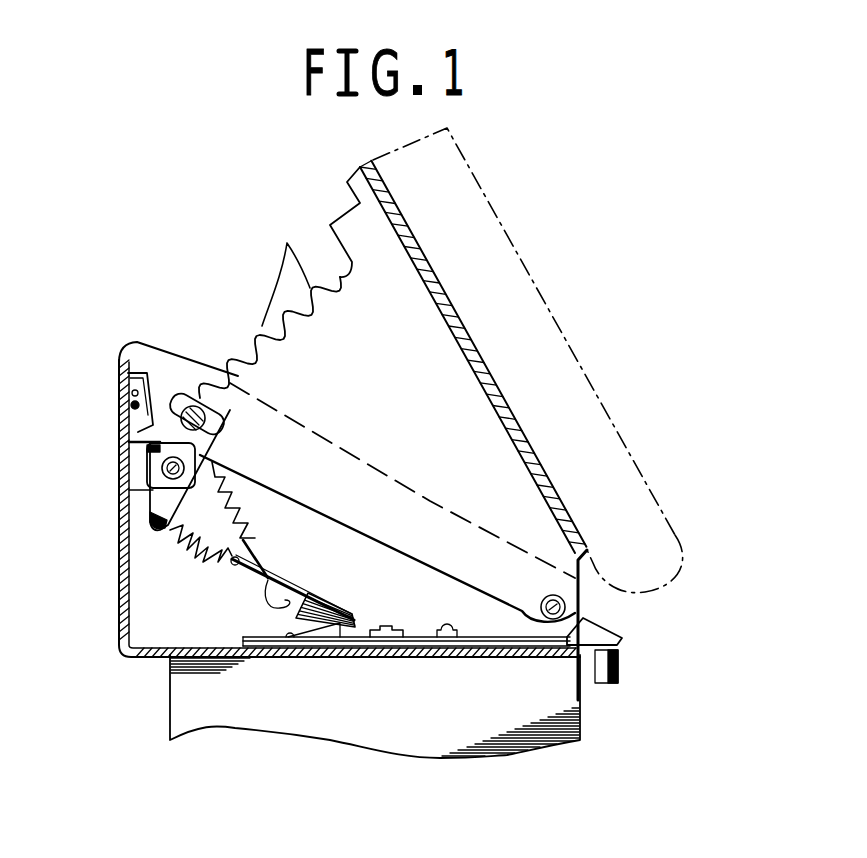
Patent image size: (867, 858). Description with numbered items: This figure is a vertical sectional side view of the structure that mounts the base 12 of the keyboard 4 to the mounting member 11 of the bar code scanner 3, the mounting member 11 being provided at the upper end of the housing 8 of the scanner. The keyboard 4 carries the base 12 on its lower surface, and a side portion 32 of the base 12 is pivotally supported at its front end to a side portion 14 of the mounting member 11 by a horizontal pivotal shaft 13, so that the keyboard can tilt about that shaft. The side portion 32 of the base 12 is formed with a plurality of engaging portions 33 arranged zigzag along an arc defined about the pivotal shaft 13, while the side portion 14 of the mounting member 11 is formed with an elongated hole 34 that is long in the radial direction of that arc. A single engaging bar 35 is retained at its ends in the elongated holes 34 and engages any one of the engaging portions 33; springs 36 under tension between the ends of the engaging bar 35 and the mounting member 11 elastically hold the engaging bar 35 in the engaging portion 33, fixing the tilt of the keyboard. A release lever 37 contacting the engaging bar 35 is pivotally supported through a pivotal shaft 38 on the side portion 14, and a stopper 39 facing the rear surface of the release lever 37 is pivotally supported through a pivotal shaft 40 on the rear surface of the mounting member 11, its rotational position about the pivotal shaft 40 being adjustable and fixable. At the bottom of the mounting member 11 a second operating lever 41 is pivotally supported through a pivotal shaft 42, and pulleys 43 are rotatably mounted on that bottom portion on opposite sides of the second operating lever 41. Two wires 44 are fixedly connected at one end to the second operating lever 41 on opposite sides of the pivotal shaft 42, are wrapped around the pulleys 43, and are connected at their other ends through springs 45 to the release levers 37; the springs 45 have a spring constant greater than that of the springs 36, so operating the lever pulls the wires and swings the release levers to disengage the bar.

The bar code scanner 3 is at (215, 683).
The keyboard 4 is at (687, 567).
The housing 8 is at (295, 703).
The mounting member 11 is at (147, 616).
The base 12 is at (441, 291).
The pivotal shaft 13 is at (570, 603).
The side portion of the mounting member 14 is at (152, 358).
The side portion of the base 32 is at (492, 470).
The engaging portions 33 is at (279, 282).
The elongated hole 34 is at (177, 398).
The engaging bar 35 is at (204, 398).
The springs 36 is at (250, 494).
The release lever 37 is at (152, 497).
The pivotal shaft 38 is at (158, 467).
The stopper 39 is at (136, 374).
The pivotal shaft 40 is at (128, 400).
The second operating lever 41 is at (503, 640).
The pivotal shaft 42 is at (383, 650).
The pulleys 43 is at (350, 613).
The wires 44 is at (283, 581).
The springs 45 is at (205, 562).